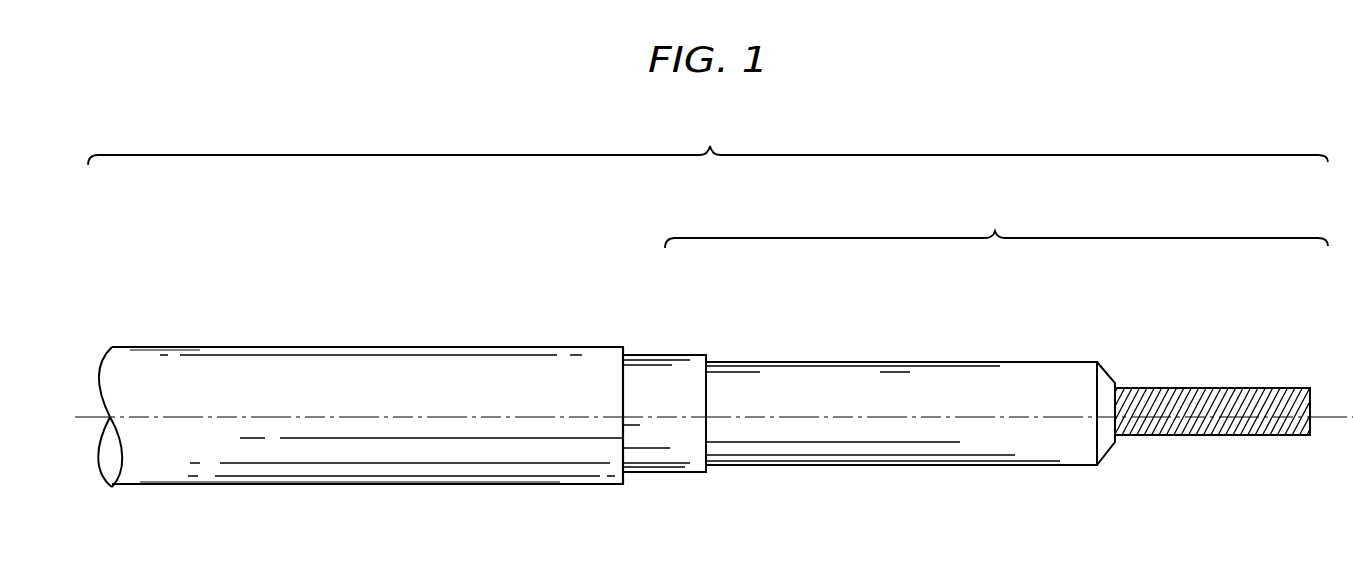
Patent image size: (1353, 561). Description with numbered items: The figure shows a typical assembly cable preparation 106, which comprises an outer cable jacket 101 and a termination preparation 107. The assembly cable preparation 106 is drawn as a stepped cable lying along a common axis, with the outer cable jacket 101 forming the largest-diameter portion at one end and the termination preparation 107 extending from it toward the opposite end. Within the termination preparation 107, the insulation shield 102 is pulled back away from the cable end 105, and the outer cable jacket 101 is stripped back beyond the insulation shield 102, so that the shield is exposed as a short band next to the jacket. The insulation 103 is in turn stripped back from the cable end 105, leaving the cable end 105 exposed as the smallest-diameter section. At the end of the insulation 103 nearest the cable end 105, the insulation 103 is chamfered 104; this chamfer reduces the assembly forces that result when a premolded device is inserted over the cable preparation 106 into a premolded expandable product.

The outer cable jacket 101 is at (418, 346).
The insulation shield 102 is at (698, 355).
The insulation 103 is at (900, 362).
The chamfer 104 is at (1105, 368).
The cable end 105 is at (1268, 388).
The assembly cable preparation 106 is at (708, 142).
The termination preparation 107 is at (996, 226).